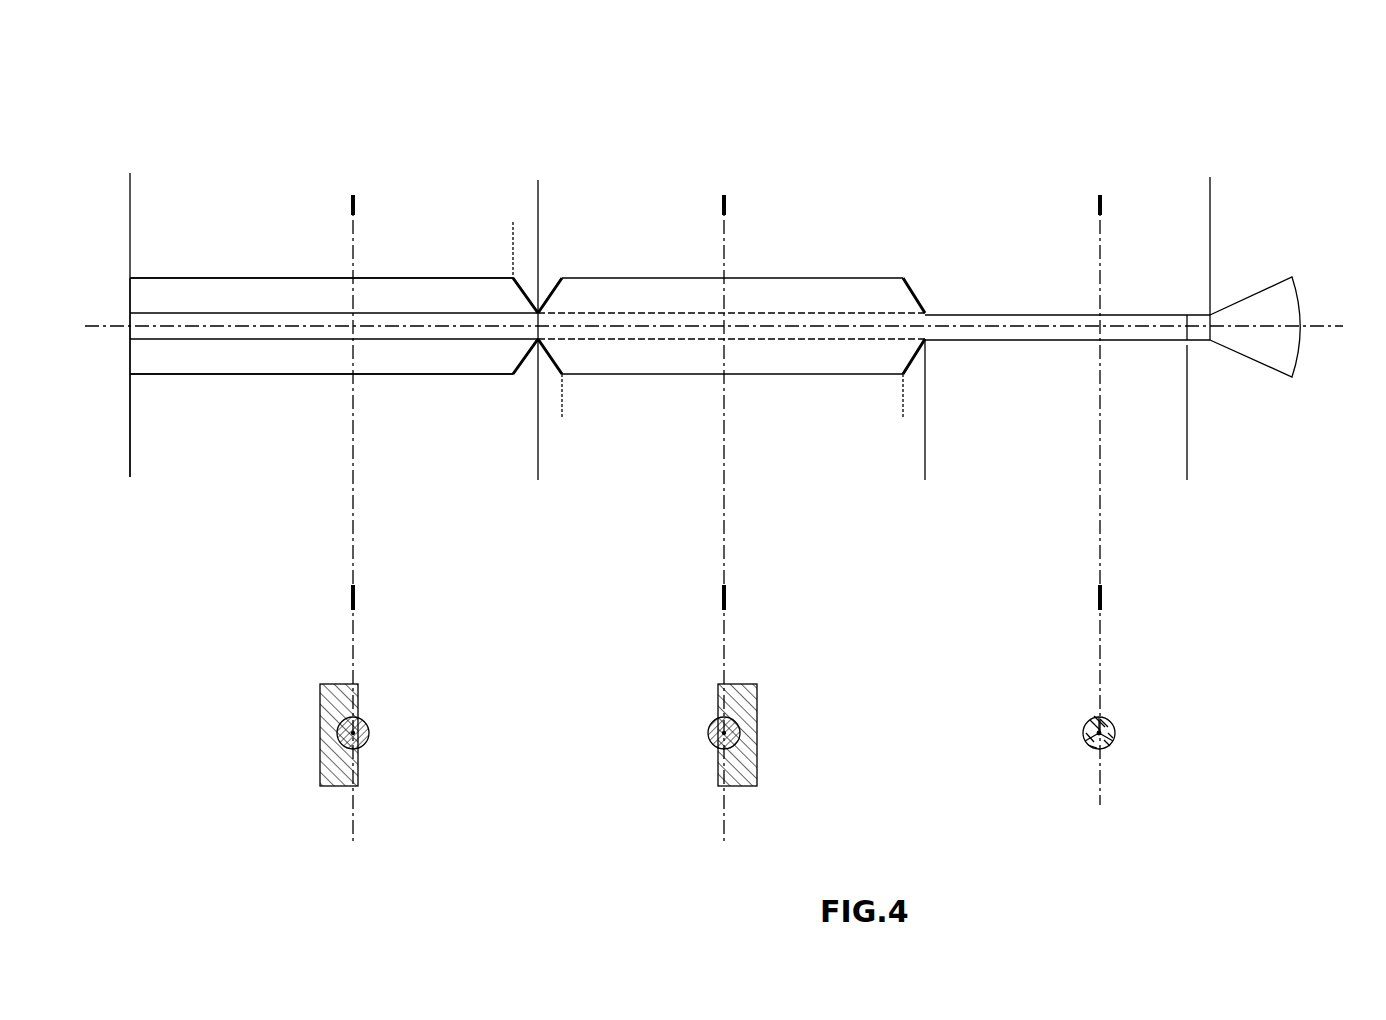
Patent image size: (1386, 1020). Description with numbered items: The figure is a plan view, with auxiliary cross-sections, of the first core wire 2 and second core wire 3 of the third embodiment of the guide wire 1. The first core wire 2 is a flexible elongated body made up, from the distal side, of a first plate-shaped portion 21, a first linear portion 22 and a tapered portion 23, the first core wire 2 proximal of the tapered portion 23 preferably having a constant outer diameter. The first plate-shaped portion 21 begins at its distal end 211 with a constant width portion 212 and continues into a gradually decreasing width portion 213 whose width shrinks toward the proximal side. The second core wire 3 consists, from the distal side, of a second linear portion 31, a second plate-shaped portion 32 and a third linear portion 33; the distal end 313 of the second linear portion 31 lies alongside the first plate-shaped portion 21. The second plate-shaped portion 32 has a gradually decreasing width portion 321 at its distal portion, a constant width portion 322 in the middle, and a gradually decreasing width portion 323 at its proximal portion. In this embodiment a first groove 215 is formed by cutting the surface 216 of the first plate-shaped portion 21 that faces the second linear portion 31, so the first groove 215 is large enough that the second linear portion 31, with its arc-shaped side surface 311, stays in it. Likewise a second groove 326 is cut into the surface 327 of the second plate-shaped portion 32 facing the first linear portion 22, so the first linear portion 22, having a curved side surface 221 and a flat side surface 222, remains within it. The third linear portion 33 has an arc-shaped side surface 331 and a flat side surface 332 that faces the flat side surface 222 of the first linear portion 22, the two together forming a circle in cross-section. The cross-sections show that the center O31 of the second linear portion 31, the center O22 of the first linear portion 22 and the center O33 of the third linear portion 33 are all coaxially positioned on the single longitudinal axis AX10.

The guide wire 1 is at (1206, 89).
The first core wire 2 is at (321, 142).
The second core wire 3 is at (1093, 506).
The first plate-shaped portion 21 is at (130, 194).
The first linear portion 22 is at (1210, 194).
The tapered portion 23 is at (1210, 194).
The distal end 211 is at (130, 290).
The constant width portion 212 is at (130, 240).
The gradually decreasing width portion 213 is at (538, 240).
The first groove 215 is at (216, 318).
The surface 216 is at (396, 296).
The side surface 221 is at (1083, 738).
The flat side surface 222 is at (1110, 720).
The second linear portion 31 is at (538, 466).
The second plate-shaped portion 32 is at (538, 466).
The third linear portion 33 is at (925, 466).
The side surface 311 is at (274, 334).
The distal end 313 is at (130, 334).
The gradually decreasing width portion 321 is at (538, 406).
The constant width portion 322 is at (562, 406).
The gradually decreasing width portion 323 is at (925, 406).
The second groove 326 is at (787, 332).
The surface 327 is at (680, 360).
The side surface 331 is at (1038, 341).
The flat side surface 332 is at (1088, 720).
The axis AX10 is at (1327, 322).
The center of the semicircle in the second linear portion O31 is at (368, 740).
The center of the semicircle in the first linear portion O22 is at (722, 734).
The center of the semicircle in the third linear portion O33 is at (1097, 742).